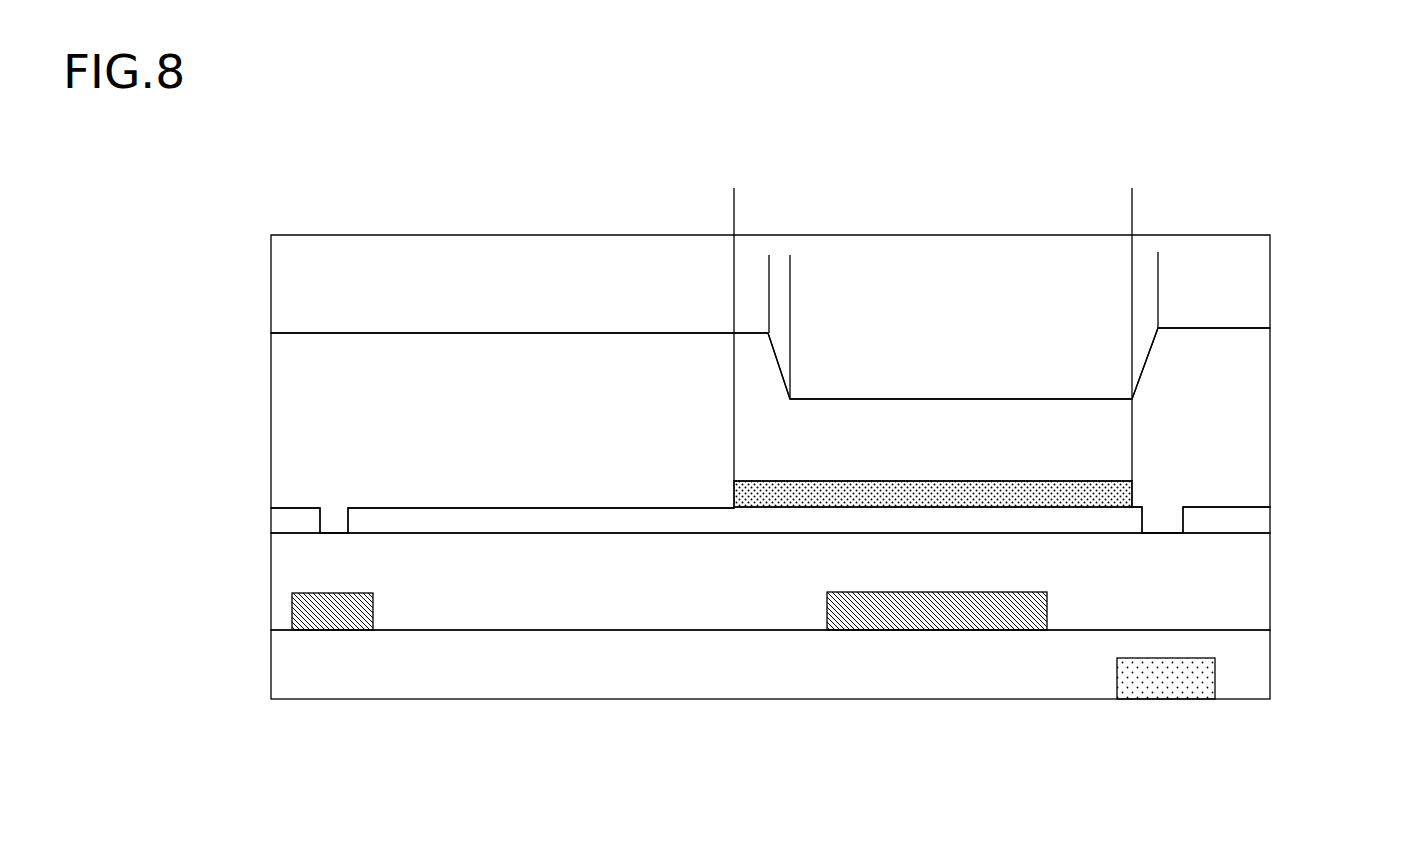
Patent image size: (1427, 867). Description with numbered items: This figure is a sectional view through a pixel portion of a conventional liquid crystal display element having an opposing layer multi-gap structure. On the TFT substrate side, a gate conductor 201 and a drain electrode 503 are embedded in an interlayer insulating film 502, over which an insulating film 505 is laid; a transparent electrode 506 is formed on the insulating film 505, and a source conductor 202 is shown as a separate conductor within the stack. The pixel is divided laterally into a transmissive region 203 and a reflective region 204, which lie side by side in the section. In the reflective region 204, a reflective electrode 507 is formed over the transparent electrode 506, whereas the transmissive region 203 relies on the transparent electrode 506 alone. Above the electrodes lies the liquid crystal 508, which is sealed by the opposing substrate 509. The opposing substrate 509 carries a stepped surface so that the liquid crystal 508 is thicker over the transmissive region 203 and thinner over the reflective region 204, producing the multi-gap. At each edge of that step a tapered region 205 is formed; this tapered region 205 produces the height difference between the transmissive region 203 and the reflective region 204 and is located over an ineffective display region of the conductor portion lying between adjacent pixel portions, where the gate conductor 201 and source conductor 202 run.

The gate conductor 201 is at (1157, 695).
The source conductor 202 is at (347, 623).
The transmissive region 203 is at (724, 220).
The reflective region 204 is at (1122, 220).
The tapered region 205 is at (769, 278).
The interlayer insulating film 502 is at (1223, 642).
The drain electrode 503 is at (903, 613).
The insulating film 505 is at (1223, 577).
The transparent electrode 506 is at (1253, 523).
The reflective electrode 507 is at (1108, 498).
The liquid crystal 508 is at (1228, 376).
The opposing substrate 509 is at (1227, 279).